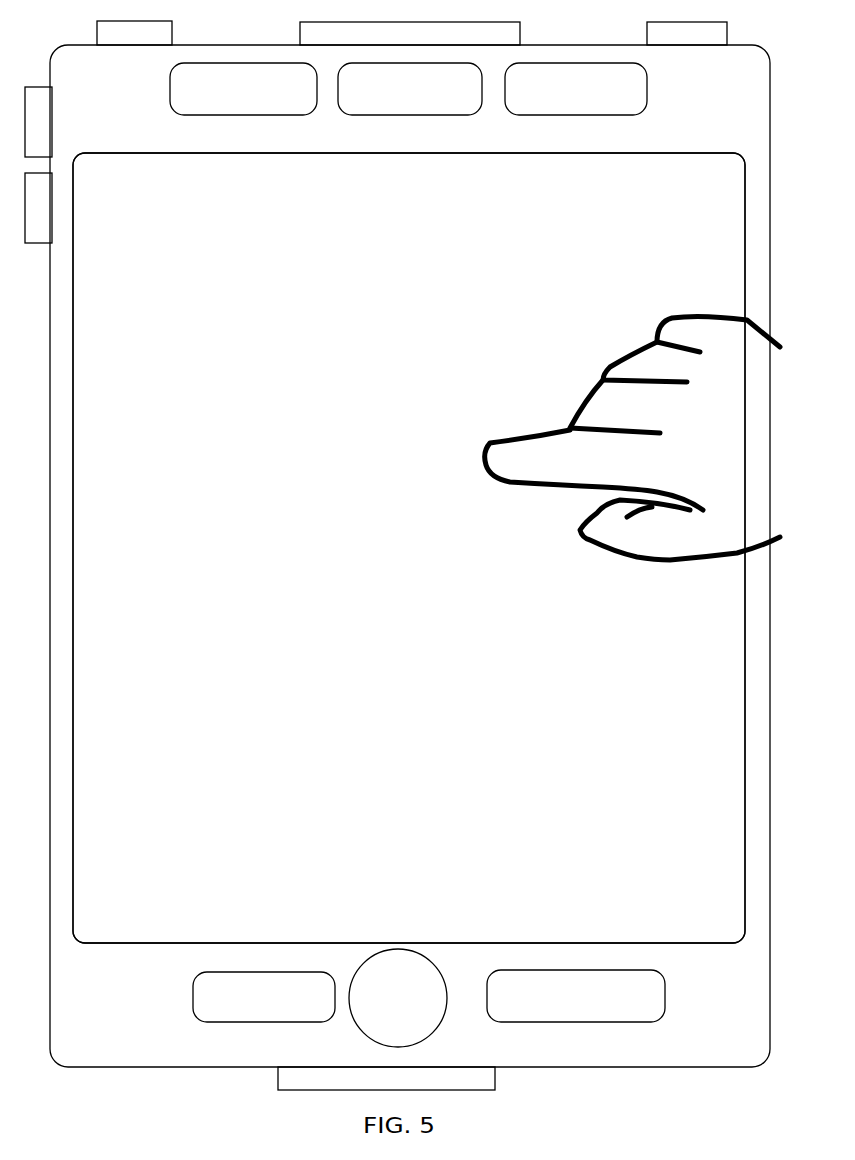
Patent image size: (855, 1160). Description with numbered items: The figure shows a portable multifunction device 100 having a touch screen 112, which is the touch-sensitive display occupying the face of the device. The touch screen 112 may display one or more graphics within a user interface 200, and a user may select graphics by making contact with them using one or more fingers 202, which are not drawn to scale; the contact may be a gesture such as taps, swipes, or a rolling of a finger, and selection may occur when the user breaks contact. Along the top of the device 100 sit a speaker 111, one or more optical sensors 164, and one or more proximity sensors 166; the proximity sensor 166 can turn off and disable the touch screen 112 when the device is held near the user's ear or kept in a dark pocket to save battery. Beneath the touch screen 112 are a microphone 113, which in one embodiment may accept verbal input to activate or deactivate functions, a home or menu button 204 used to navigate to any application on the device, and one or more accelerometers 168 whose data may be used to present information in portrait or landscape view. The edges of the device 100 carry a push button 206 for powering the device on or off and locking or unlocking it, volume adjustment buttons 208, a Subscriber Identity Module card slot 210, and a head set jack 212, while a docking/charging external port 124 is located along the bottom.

The portable multifunction device 100 is at (604, 45).
The push button 206 is at (134, 33).
The Subscriber Identity Module (SIM) card slot 210 is at (410, 33).
The head set jack 212 is at (684, 85).
The volume adjustment button(s) 208 is at (41, 165).
The speaker 111 is at (243, 89).
The optical sensor 164 is at (410, 89).
The proximity sensor 166 is at (576, 89).
The user interface (UI) 200 is at (123, 152).
The touch screen 112 is at (409, 548).
The finger 202 is at (632, 438).
The microphone 113 is at (264, 997).
The menu button 204 is at (398, 998).
The accelerometer 168 is at (576, 996).
The external port 124 is at (386, 1078).